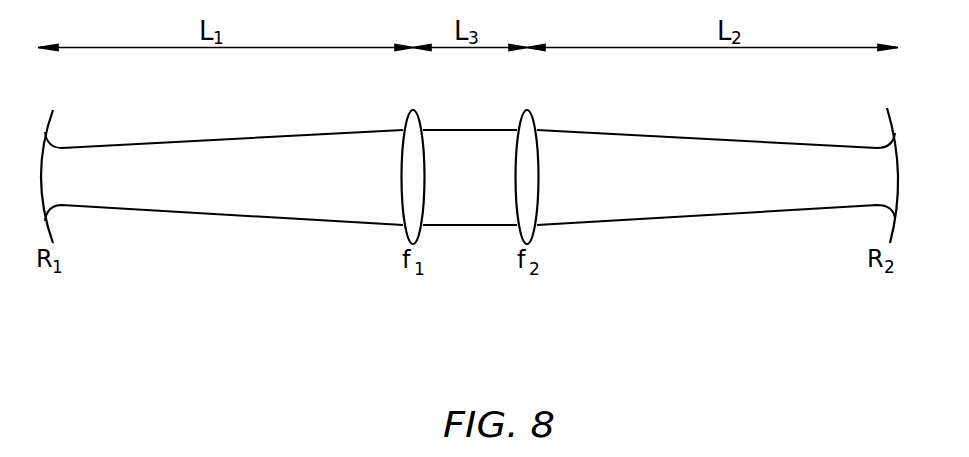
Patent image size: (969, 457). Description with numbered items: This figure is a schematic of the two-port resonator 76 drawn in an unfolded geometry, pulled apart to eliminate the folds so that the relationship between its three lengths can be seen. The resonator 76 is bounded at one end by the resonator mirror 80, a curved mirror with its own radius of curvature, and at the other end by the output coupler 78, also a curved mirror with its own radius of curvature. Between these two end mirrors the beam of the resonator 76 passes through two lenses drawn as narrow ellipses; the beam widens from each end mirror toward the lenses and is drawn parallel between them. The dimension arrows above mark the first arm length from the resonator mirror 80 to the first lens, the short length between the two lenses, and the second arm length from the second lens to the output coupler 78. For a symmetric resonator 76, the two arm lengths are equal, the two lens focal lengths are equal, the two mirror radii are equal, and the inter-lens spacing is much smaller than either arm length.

The resonator 76 is at (595, 240).
The output coupler 78 is at (890, 116).
The resonator mirror 80 is at (47, 127).